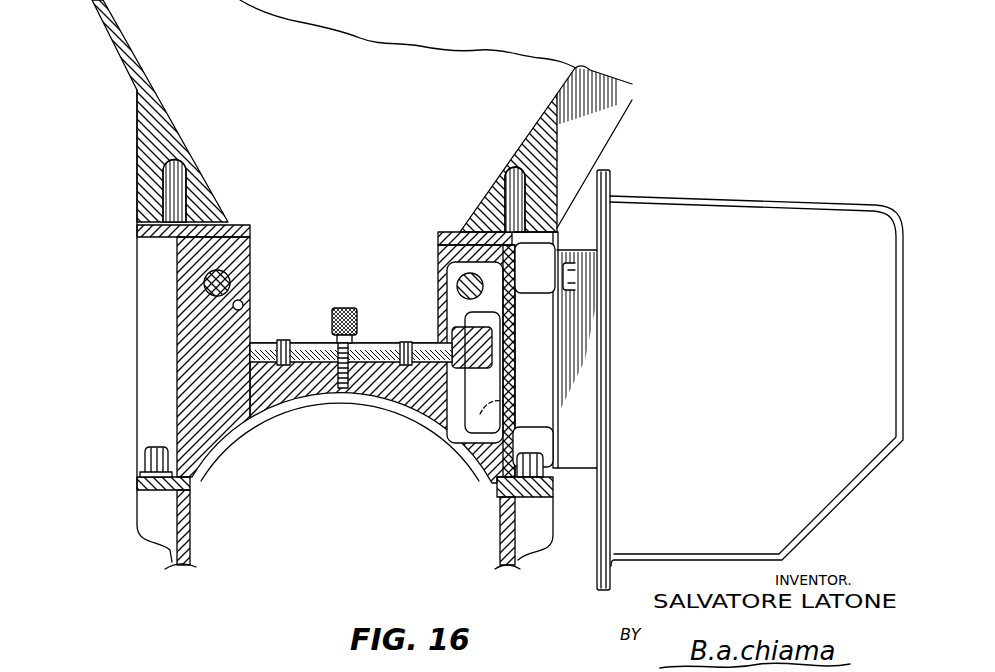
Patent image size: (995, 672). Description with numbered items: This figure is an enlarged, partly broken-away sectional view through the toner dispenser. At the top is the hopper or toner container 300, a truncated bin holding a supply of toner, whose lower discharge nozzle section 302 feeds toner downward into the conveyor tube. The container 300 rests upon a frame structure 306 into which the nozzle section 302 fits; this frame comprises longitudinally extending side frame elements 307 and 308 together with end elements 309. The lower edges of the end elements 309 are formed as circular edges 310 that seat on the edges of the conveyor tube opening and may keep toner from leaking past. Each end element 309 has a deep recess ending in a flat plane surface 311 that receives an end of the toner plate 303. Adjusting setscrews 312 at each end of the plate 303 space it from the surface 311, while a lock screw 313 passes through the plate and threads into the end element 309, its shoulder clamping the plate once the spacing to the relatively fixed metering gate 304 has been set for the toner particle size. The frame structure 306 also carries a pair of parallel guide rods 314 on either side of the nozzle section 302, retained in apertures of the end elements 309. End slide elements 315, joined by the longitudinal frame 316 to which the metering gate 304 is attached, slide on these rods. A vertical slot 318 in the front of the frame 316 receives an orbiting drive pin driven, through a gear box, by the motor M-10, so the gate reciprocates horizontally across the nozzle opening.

The toner container 300 is at (149, 77).
The discharge nozzle section 302 is at (242, 301).
The toner plate 303 is at (383, 343).
The metering gate 304 is at (457, 348).
The frame structure 306 is at (247, 226).
The side frame element 307 is at (514, 310).
The side frame element 308 is at (177, 252).
The end element 309 is at (190, 383).
The circular edge 310 is at (219, 467).
The flat plane surface 311 is at (297, 370).
The adjusting setscrew 312 is at (283, 341).
The lock screw 313 is at (343, 308).
The guide rod 314 is at (233, 268).
The end slide element 315 is at (452, 306).
The frame 316 is at (492, 349).
The vertical slot 318 is at (500, 406).
The motor M-10 is at (811, 250).